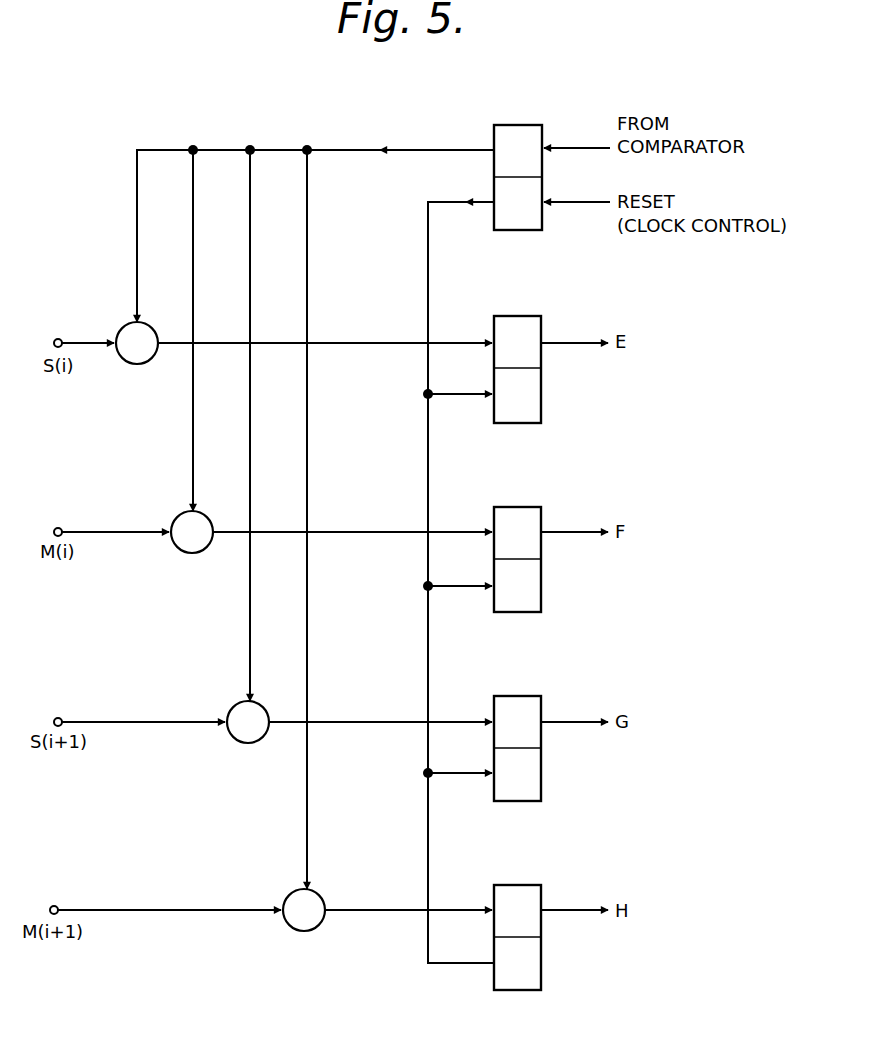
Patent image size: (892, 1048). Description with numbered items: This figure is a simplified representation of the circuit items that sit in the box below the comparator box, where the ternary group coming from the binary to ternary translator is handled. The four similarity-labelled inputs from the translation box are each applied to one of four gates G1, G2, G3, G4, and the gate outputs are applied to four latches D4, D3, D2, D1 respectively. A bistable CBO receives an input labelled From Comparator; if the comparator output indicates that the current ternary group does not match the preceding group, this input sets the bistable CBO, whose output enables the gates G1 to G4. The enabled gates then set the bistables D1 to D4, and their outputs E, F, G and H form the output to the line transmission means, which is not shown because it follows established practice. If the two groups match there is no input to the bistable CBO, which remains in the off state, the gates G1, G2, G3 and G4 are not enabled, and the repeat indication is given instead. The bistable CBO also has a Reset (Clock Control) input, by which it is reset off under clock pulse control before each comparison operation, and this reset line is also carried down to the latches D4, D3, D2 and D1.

The gate G1 is at (137, 355).
The gate G2 is at (192, 545).
The gate G3 is at (248, 734).
The gate G4 is at (304, 924).
The bistable CBO is at (518, 163).
The latch D1 is at (517, 923).
The latch D2 is at (517, 735).
The latch D3 is at (517, 546).
The latch D4 is at (517, 357).